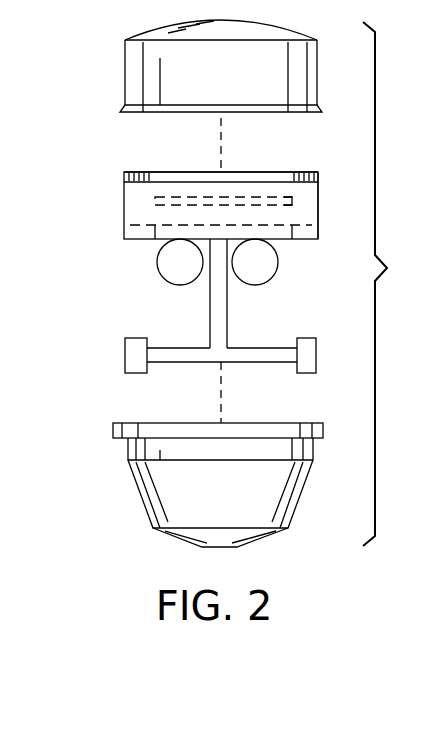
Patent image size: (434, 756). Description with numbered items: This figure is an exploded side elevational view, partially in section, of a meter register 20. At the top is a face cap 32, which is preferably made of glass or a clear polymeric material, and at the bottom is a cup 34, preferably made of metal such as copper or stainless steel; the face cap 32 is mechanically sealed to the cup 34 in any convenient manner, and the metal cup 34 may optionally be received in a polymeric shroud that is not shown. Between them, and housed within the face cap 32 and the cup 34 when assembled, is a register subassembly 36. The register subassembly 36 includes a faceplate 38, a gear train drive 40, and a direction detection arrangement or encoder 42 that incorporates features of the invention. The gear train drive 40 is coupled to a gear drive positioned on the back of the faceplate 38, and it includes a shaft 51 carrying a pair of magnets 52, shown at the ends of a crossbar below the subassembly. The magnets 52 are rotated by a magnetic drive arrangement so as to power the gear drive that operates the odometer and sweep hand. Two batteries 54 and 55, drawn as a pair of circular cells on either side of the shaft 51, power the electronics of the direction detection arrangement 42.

The register 20 is at (398, 284).
The face cap 32 is at (147, 38).
The cup 34 is at (172, 535).
The register subassembly 36 is at (190, 184).
The faceplate 38 is at (158, 172).
The gear train drive 40 is at (318, 212).
The direction detection arrangement 42 is at (150, 198).
The shaft 51 is at (228, 320).
The magnets 52 is at (115, 358).
The battery 54 is at (158, 268).
The battery 55 is at (278, 268).